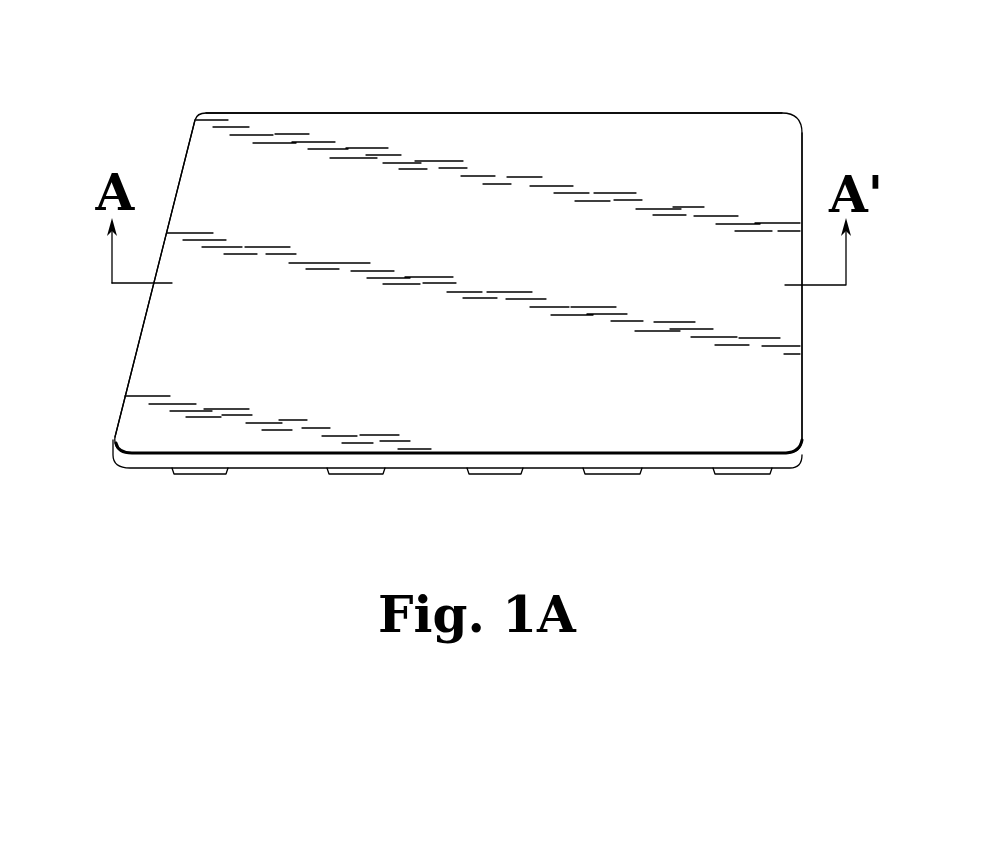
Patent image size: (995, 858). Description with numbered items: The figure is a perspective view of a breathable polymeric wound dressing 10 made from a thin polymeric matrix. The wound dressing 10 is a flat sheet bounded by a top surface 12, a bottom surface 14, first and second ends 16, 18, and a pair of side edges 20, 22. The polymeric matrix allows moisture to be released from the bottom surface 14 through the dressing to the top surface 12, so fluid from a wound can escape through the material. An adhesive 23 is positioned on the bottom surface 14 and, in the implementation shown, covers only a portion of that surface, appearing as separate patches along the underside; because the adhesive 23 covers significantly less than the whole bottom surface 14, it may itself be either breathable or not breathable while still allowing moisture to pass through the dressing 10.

The wound dressing 10 is at (656, 72).
The top surface 12 is at (787, 421).
The bottom surface 14 is at (675, 470).
The first end 16 is at (277, 460).
The second end 18 is at (427, 112).
The edge 20 is at (135, 349).
The edge 22 is at (803, 374).
The adhesive 23 is at (488, 475).